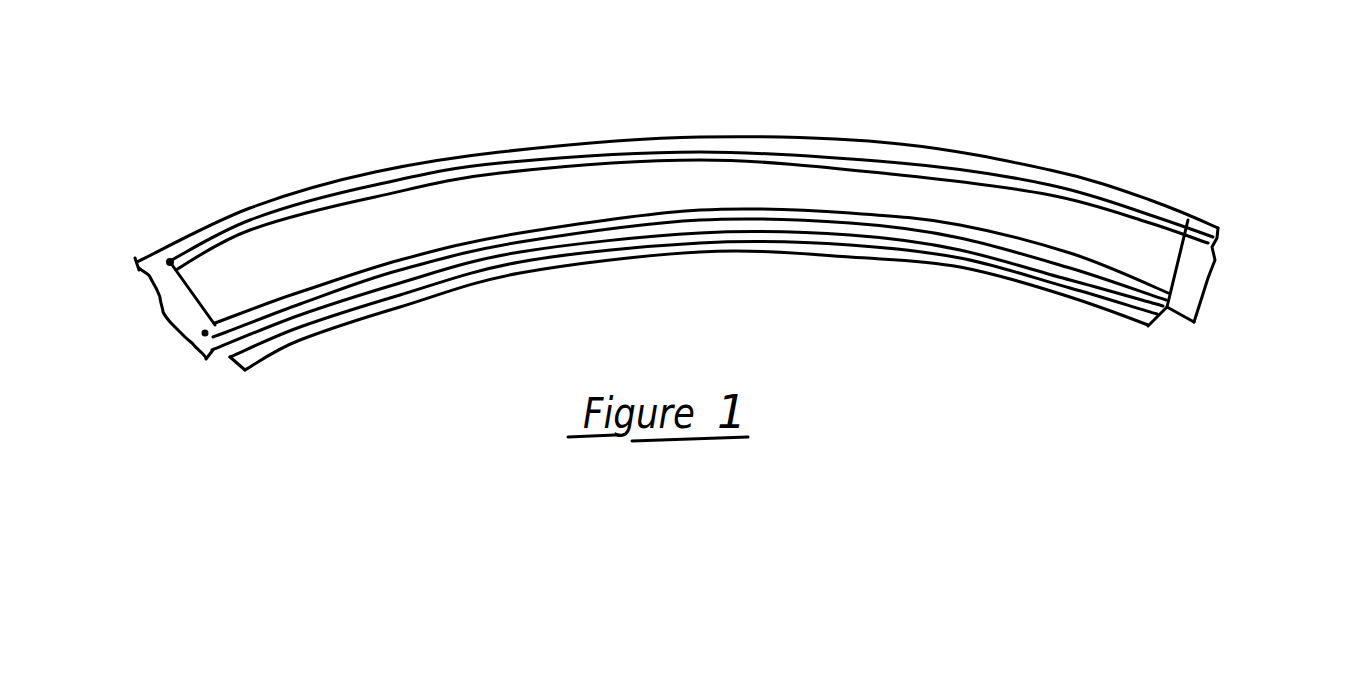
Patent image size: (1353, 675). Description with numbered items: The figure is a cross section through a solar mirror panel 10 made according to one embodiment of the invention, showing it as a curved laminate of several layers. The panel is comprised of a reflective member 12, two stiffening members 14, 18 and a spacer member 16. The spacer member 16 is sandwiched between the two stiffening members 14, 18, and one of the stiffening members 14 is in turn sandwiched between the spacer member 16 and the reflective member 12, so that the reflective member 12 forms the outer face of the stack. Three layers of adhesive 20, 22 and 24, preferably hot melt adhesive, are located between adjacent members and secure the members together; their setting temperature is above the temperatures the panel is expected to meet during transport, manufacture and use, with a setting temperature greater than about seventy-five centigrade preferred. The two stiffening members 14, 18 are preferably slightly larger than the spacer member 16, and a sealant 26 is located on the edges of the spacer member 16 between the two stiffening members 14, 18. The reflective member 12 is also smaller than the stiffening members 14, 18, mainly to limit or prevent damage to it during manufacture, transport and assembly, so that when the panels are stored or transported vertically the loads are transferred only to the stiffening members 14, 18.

The solar mirror panel 10 is at (707, 270).
The reflective member 12 is at (280, 344).
The stiffening member 14 is at (221, 358).
The spacer member 16 is at (225, 287).
The stiffening member 18 is at (152, 255).
The adhesive layer 20 is at (1166, 308).
The adhesive layer 22 is at (1157, 300).
The adhesive layer 24 is at (1213, 244).
The sealant 26 is at (178, 303).